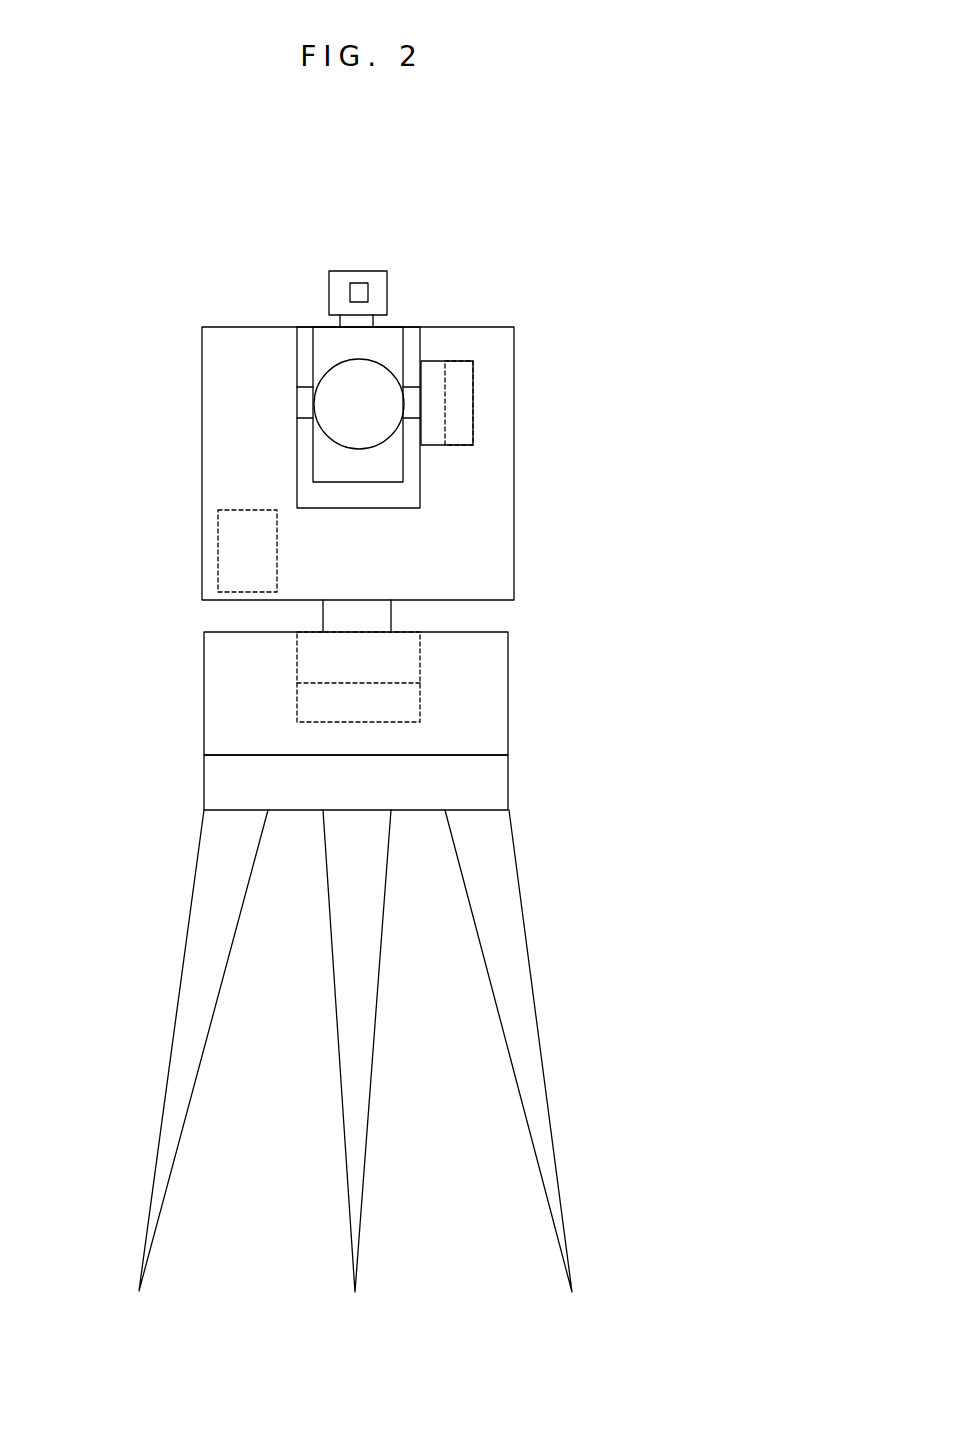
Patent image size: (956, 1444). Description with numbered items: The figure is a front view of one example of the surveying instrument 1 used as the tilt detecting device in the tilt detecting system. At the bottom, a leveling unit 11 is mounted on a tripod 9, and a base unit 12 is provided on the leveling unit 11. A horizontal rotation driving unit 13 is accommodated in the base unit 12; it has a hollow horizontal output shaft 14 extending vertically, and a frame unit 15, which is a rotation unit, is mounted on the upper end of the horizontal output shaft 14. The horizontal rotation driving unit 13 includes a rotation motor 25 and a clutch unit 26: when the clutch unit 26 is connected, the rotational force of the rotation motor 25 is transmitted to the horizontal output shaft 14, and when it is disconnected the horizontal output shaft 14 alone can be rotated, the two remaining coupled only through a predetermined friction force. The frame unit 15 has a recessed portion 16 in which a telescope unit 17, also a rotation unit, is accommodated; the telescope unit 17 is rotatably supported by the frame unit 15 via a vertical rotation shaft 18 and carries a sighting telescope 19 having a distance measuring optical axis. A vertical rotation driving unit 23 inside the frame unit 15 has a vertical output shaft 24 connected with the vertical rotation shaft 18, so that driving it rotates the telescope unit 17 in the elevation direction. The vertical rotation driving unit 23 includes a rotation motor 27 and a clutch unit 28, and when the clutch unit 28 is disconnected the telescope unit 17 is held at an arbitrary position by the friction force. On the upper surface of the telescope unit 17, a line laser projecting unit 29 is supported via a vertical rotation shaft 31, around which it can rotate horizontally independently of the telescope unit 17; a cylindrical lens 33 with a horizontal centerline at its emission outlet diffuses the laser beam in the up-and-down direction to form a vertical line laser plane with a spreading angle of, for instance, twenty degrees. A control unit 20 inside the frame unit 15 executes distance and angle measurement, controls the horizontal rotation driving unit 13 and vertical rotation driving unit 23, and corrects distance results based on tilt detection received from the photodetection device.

The surveying instrument 1 is at (589, 185).
The tripod 9 is at (520, 897).
The leveling unit 11 is at (508, 780).
The base unit 12 is at (508, 698).
The horizontal rotation driving unit 13 is at (422, 695).
The horizontal output shaft 14 is at (391, 614).
The frame unit 15 is at (515, 432).
The recessed portion 16 is at (419, 342).
The telescope unit 17 is at (322, 326).
The vertical rotation shaft 18 is at (308, 385).
The sighting telescope 19 is at (337, 440).
The control unit 20 is at (218, 553).
The vertical rotation driving unit 23 is at (476, 395).
The vertical output shaft 24 is at (407, 419).
The rotation motor 25 is at (297, 707).
The clutch unit 26 is at (297, 660).
The rotation motor 27 is at (458, 360).
The clutch unit 28 is at (433, 360).
The line laser projecting unit 29 is at (343, 270).
The vertical rotation shaft 31 is at (378, 325).
The cylindrical lens 33 is at (362, 283).